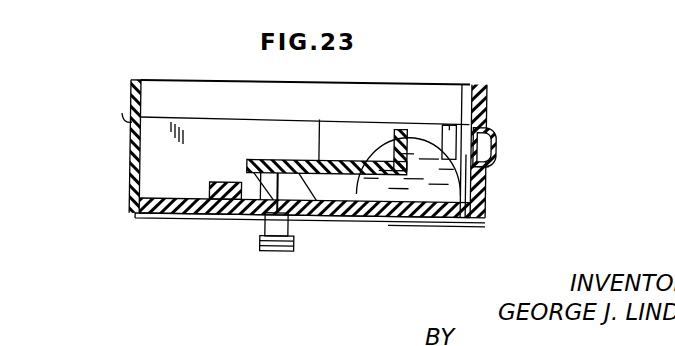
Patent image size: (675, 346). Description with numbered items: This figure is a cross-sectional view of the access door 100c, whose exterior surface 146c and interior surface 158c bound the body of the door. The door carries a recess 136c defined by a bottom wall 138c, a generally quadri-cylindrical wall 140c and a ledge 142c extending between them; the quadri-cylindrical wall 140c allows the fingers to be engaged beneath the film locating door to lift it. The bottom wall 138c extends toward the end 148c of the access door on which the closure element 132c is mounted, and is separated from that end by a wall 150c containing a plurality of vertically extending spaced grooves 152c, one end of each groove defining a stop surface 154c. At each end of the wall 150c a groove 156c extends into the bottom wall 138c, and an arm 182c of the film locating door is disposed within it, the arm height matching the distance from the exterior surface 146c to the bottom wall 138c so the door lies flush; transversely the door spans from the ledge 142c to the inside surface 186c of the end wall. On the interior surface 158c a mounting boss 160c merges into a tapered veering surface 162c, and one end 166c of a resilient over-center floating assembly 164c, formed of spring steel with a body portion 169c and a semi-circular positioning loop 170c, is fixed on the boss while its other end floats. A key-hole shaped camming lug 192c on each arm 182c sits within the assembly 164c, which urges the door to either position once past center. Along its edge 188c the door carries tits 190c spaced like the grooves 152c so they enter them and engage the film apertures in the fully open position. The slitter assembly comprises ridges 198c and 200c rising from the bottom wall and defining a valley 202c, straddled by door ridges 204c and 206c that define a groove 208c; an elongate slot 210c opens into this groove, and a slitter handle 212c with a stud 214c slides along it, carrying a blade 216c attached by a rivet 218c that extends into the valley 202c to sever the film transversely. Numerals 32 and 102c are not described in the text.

The hinge 32 is at (133, 79).
The access door 100c is at (492, 86).
The hinge pin 102c is at (122, 113).
The closure element 132c is at (497, 133).
The recess 136c is at (320, 117).
The bottom wall 138c is at (306, 160).
The quadri-cylindrical wall 140c is at (188, 217).
The ledge 142c is at (250, 168).
The exterior surface 146c is at (134, 214).
The end of the access door 148c is at (484, 204).
The wall 150c is at (400, 128).
The grooves 152c is at (393, 132).
The stop surface 154c is at (421, 133).
The groove 156c is at (393, 164).
The interior surface 158c is at (131, 188).
The mounting boss 160c is at (321, 210).
The tapered veering surface 162c is at (334, 215).
The resilient over-center floating assembly 164c is at (388, 223).
The end of the floating assembly 166c is at (309, 212).
The body portion 169c is at (488, 186).
The positioning loop 170c is at (418, 226).
The arms 182c is at (443, 121).
The inside surface 186c is at (497, 165).
The edge 188c is at (484, 222).
The tits 190c is at (484, 205).
The camming lug 192c is at (425, 235).
The elongate ridge 198c is at (270, 168).
The elongate ridge 200c is at (293, 163).
The valley or groove 202c is at (292, 166).
The elongate ridge 204c is at (228, 176).
The elongate ridge 206c is at (353, 109).
The groove 208c is at (258, 212).
The elongate slot 210c is at (262, 232).
The slitter handle 212c is at (268, 245).
The stud 214c is at (274, 252).
The blade 216c is at (282, 168).
The rivet 218c is at (258, 262).